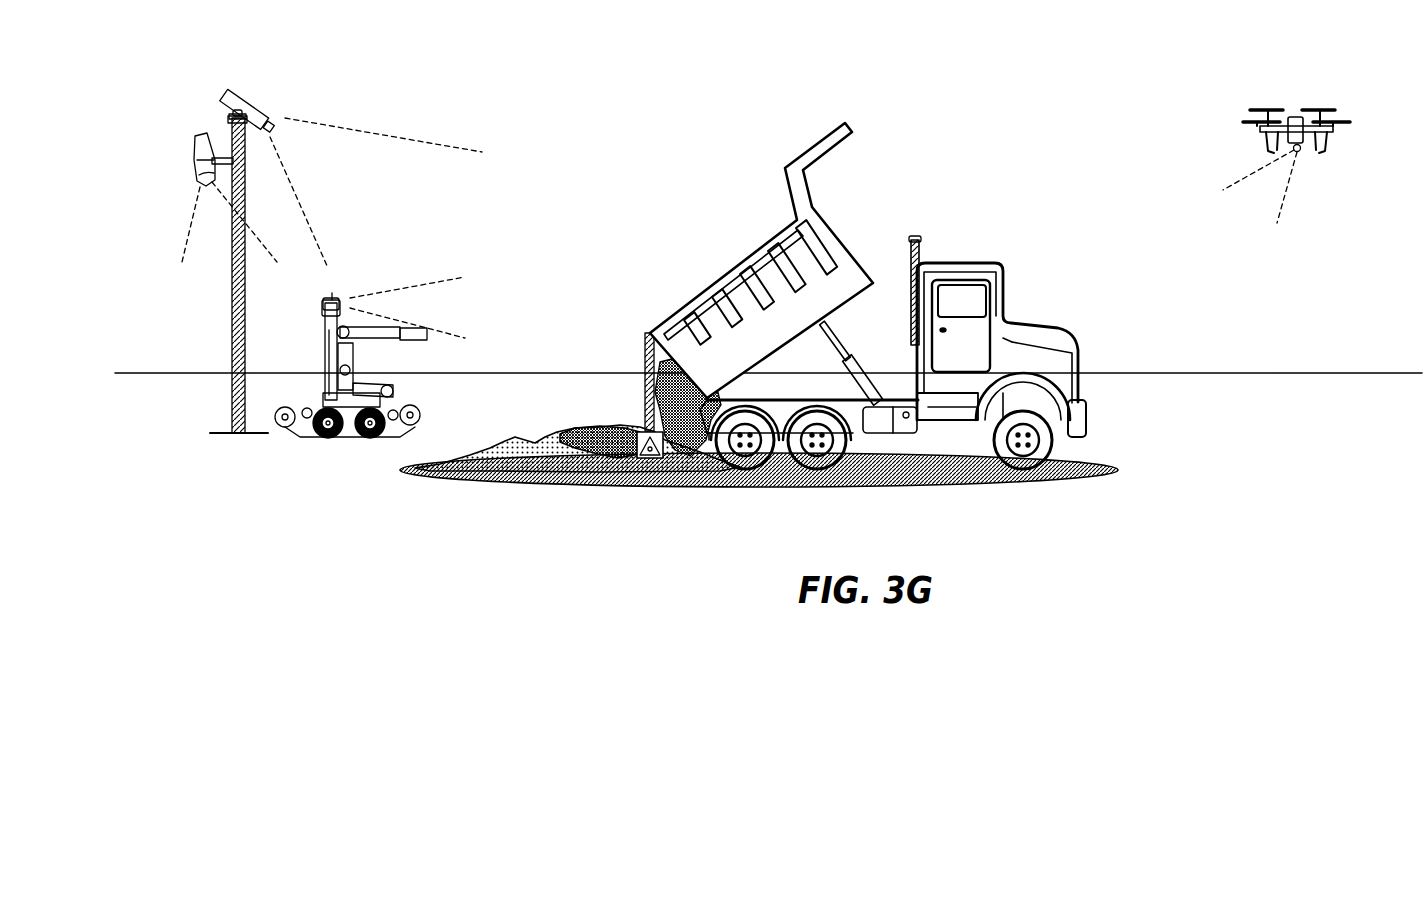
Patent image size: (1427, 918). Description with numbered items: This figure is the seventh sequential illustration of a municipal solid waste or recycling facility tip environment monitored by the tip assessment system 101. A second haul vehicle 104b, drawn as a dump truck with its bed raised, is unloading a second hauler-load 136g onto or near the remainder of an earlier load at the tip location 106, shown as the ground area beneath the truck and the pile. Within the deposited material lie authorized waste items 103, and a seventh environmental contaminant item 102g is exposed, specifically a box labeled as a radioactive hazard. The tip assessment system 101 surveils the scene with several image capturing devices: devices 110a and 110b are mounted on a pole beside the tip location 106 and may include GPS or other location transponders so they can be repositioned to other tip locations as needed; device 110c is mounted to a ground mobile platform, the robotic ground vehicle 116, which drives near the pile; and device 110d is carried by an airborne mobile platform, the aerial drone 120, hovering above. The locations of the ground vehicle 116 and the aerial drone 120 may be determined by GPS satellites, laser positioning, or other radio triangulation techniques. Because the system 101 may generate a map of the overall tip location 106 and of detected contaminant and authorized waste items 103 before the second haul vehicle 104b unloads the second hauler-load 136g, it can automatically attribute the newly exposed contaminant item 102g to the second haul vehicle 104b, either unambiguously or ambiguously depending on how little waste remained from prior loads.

The tip assessment system 101 is at (150, 131).
The image capturing device 110a is at (243, 88).
The image capturing device 110b is at (200, 134).
The image capturing device 110c is at (333, 297).
The image capturing device 110d is at (1301, 152).
The robotic ground vehicle 116 is at (327, 405).
The second hauler-load 136g is at (510, 440).
The authorized waste items 103 is at (586, 435).
The seventh environmental contaminant item 102g is at (645, 432).
The second haul vehicle 104b is at (1030, 331).
The tip location 106 is at (1082, 484).
The aerial drone 120 is at (1330, 135).